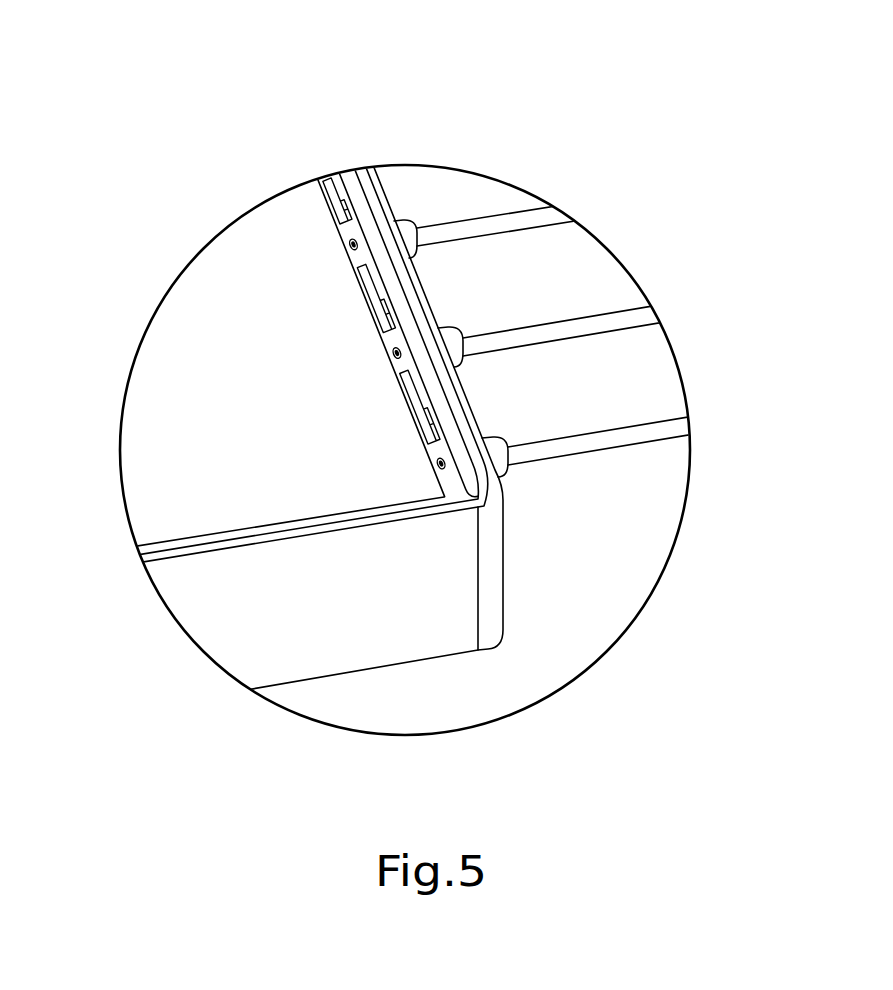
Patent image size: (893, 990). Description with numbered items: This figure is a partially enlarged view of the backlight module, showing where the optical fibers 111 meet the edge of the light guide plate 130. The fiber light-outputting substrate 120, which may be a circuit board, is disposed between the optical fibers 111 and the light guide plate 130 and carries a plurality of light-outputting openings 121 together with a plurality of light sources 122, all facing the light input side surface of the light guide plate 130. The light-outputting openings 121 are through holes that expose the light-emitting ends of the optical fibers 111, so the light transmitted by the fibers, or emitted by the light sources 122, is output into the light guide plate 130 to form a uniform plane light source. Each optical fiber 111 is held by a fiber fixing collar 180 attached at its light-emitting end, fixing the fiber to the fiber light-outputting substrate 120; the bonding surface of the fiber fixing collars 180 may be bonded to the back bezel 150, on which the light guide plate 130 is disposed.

The optical fibers 111 is at (597, 313).
The fiber light-outputting substrate 120 is at (358, 205).
The light-outputting openings 121 is at (350, 243).
The light sources 122 is at (326, 184).
The light guide plate 130 is at (203, 330).
The back bezel 150 is at (367, 627).
The fiber fixing collars 180 is at (490, 437).